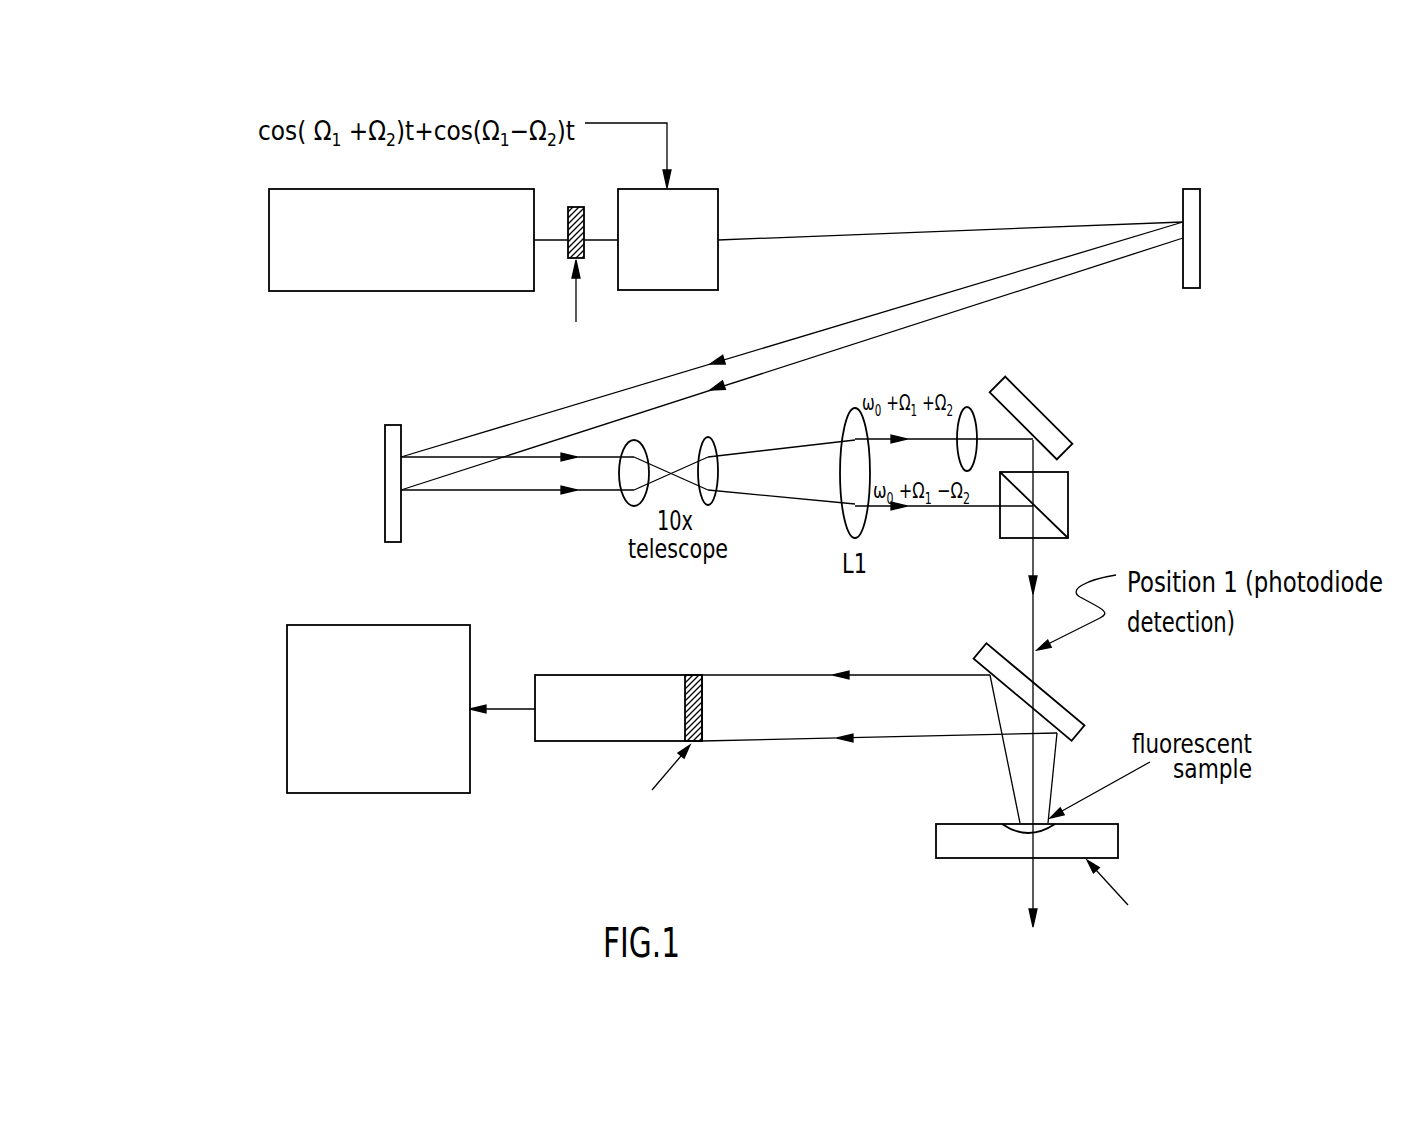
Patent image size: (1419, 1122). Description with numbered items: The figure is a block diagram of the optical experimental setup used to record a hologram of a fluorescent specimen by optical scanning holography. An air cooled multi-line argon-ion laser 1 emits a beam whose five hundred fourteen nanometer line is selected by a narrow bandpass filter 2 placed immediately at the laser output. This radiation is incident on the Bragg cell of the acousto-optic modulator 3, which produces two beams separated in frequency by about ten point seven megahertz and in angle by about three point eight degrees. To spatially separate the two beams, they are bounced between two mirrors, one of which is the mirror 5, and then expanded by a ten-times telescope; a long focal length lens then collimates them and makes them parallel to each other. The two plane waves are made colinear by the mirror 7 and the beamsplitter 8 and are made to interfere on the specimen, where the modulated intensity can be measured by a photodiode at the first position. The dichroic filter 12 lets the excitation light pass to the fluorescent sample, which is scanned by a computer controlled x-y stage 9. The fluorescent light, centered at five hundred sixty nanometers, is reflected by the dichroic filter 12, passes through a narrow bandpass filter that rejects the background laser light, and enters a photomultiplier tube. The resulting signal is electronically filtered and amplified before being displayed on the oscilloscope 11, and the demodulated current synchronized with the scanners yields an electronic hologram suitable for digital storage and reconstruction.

The argon-ion laser 1 is at (269, 230).
The narrow bandpass filter 2 is at (577, 207).
The acousto-optic modulator 3 is at (718, 197).
The mirror 5 is at (1200, 218).
The mirror 7 is at (1040, 395).
The beamsplitter 8 is at (1068, 488).
The x-y stage 9 is at (936, 840).
The oscilloscope 11 is at (287, 650).
The dichroic filter 12 is at (1050, 695).